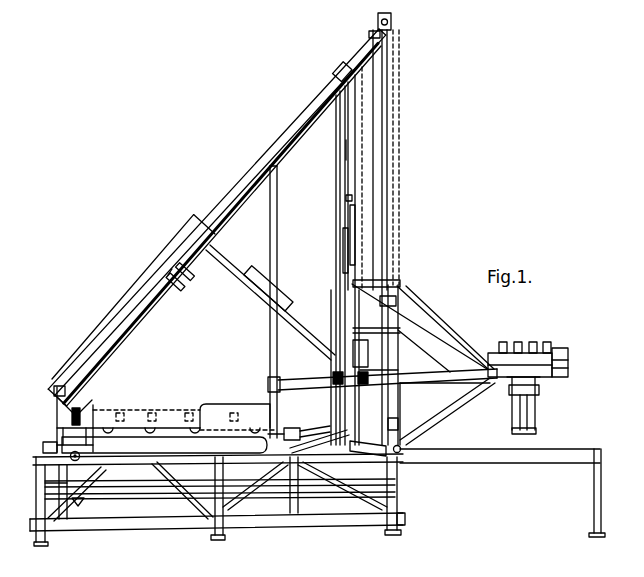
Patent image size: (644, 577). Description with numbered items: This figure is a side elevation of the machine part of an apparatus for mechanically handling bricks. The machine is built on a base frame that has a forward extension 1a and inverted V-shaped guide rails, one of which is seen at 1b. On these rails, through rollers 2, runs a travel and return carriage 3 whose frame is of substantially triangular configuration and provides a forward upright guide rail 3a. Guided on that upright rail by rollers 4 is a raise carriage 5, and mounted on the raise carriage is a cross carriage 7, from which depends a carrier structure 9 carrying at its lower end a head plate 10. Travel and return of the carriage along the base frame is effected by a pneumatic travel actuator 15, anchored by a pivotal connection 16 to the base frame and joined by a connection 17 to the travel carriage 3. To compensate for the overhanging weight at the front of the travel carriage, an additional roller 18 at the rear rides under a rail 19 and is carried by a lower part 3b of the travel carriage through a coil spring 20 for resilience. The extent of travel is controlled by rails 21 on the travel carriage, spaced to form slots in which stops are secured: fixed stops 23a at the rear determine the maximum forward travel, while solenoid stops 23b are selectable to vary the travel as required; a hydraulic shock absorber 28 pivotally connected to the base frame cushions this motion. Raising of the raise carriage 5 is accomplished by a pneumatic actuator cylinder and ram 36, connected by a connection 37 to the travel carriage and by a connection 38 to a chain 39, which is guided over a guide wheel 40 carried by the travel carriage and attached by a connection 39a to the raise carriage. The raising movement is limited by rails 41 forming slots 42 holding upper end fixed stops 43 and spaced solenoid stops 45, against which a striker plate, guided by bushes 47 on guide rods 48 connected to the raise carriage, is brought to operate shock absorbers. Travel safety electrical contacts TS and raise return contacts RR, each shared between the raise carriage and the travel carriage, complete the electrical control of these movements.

The forward extension 1a is at (536, 457).
The inverted V-shaped guide rail 1b is at (490, 457).
The rollers 2 is at (80, 458).
The travel and return carriage 3 is at (283, 148).
The forward upright guide rail 3a is at (391, 205).
The lower part of travel carriage 3b is at (70, 416).
The rollers 4 is at (379, 290).
The raise carriage 5 is at (438, 318).
The cross carriage 7 is at (547, 348).
The carrier structure 9 is at (552, 383).
The head plate 10 is at (533, 434).
The pneumatic travel actuator 15 is at (231, 452).
The pivotal connection 16 is at (42, 450).
The connection 17 is at (277, 424).
The additional roller 18 is at (78, 506).
The rail 19 is at (120, 494).
The coil spring 20 is at (88, 418).
The rails 21 is at (211, 400).
The fixed stops 23a is at (125, 409).
The solenoid stops 23b is at (168, 418).
The hydraulic shock absorber 28 is at (360, 456).
The pneumatic actuator cylinder and ram 36 is at (201, 219).
The connection 37 is at (55, 386).
The connection 38 is at (350, 60).
The chain 39 is at (376, 33).
The connection 39a is at (399, 280).
The guide wheel 40 is at (392, 23).
The rails 41 is at (352, 152).
The slots 42 is at (350, 114).
The upper end fixed stops 43 is at (346, 198).
The solenoid stops 45 is at (353, 212).
The bushes 47 is at (369, 354).
The guide rods 48 is at (353, 338).
The travel safety electrical contacts TS is at (337, 353).
The raise return contacts RR is at (447, 411).